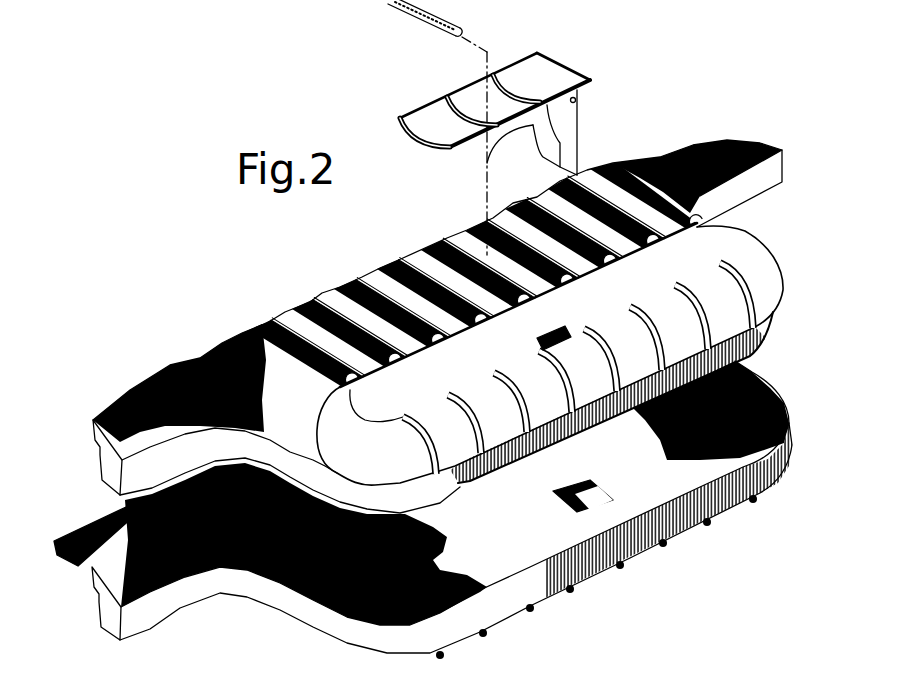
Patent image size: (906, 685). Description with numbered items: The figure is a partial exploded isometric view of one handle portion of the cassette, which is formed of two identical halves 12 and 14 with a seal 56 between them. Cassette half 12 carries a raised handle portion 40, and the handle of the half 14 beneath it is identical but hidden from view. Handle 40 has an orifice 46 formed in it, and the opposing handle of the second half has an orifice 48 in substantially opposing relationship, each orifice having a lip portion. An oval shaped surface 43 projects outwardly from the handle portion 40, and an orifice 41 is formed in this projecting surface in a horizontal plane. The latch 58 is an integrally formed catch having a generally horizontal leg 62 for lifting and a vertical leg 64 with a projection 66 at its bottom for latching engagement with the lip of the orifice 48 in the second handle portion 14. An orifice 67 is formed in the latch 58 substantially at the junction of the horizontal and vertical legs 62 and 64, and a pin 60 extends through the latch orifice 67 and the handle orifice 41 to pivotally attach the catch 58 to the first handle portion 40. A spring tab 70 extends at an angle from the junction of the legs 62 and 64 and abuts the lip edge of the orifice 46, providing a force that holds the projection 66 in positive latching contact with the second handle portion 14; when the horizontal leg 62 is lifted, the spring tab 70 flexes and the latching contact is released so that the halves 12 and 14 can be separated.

The cassette half 12 is at (304, 431).
The cassette half 14 is at (489, 551).
The raised handle portion 40 is at (473, 275).
The orifice 41 is at (554, 316).
The oval shaped surface 43 is at (389, 466).
The orifice 46 is at (527, 342).
The orifice 48 is at (668, 510).
The seal 56 is at (93, 531).
The latch 58 is at (555, 40).
The pin 60 is at (400, 23).
The horizontal leg 62 is at (471, 100).
The vertical leg 64 is at (523, 156).
The projection 66 is at (600, 132).
The orifice 67 is at (614, 88).
The spring tab 70 is at (463, 173).